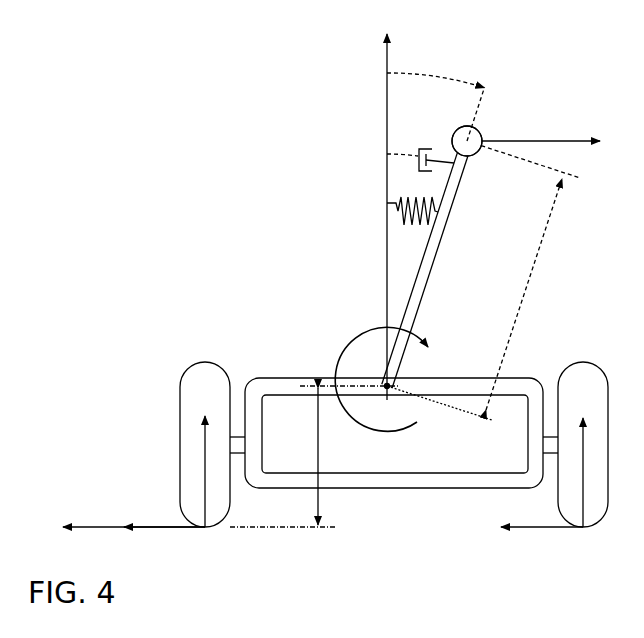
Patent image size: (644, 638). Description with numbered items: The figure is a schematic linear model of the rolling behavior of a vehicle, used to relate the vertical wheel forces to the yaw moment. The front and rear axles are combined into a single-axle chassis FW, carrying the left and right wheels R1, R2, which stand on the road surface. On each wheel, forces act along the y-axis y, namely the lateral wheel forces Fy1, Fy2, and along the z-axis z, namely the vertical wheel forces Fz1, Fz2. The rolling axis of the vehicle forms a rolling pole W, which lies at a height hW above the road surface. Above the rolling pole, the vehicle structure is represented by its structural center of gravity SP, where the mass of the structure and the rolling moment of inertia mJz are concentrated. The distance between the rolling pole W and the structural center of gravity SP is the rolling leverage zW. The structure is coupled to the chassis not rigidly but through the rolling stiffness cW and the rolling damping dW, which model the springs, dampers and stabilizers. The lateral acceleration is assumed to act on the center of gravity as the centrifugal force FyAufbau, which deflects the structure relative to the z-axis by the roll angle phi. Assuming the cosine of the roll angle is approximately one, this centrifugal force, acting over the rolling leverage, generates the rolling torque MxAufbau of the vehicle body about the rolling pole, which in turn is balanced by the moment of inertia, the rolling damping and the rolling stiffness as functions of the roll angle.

The wheel 1 R1 is at (205, 362).
The wheel 2 R2 is at (594, 362).
The chassis FW is at (392, 487).
The rolling pole W is at (393, 385).
The structural center of gravity SP is at (467, 156).
The mass of the structure and rolling moment of inertia mJz is at (477, 151).
The rolling stiffness cw is at (412, 226).
The rolling damping dw is at (420, 152).
The height of the rolling pole above the road surface hw is at (343, 455).
The rolling leverage zw is at (530, 278).
The roll angle phi is at (435, 99).
The z-axis z is at (385, 204).
The y-axis y is at (199, 541).
The force of wheel 1 along z-axis Fz1 is at (204, 460).
The force of wheel 2 along z-axis Fz2 is at (583, 460).
The force of wheel 1 along y-axis Fy1 is at (159, 542).
The force of wheel 2 along y-axis Fy2 is at (538, 543).
The centrifugal force FyAufbau is at (541, 132).
The rolling torque of the vehicle body about the rolling pole MxAufbau is at (347, 370).